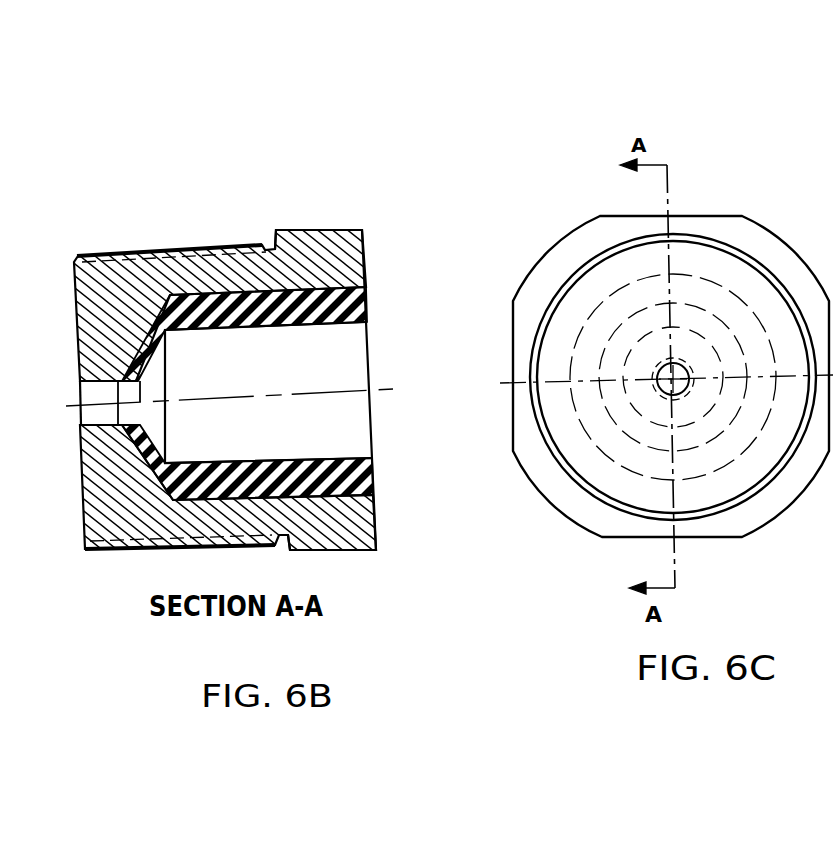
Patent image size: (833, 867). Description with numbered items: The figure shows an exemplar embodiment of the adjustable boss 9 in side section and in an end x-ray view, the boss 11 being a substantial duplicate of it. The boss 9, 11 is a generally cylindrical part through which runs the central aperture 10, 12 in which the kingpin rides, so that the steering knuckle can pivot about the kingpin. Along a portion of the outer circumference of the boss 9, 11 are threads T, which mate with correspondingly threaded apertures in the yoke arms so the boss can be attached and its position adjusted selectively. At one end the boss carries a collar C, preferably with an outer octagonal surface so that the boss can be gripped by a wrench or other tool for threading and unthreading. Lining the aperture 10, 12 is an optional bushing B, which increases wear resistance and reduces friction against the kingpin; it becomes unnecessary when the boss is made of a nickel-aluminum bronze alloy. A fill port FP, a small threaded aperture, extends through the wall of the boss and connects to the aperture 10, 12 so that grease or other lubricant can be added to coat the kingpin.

In FIG. 6B, the boss 9 is at (225, 320).
In FIG. 6C, the boss 9 is at (667, 327).
In FIG. 6B, the boss 11 is at (225, 320).
In FIG. 6C, the boss 11 is at (667, 327).
In FIG. 6B, the aperture 10 is at (268, 392).
In FIG. 6B, the aperture 12 is at (225, 367).
In FIG. 6B, the threads T is at (118, 238).
In FIG. 6B, the collar C is at (300, 233).
In FIG. 6C, the collar C is at (603, 217).
In FIG. 6B, the bushing B is at (367, 284).
In FIG. 6B, the fill port FP is at (79, 417).
In FIG. 6C, the fill port FP is at (667, 393).